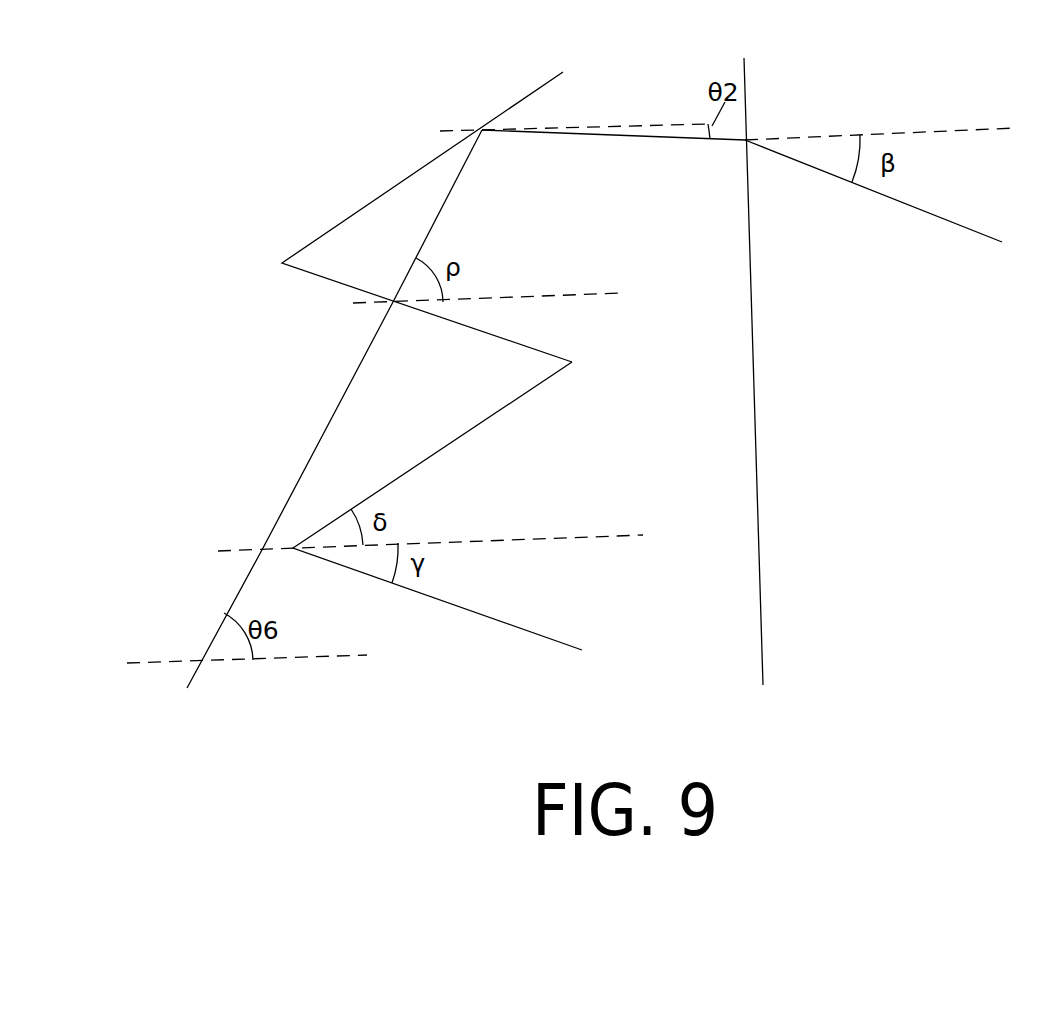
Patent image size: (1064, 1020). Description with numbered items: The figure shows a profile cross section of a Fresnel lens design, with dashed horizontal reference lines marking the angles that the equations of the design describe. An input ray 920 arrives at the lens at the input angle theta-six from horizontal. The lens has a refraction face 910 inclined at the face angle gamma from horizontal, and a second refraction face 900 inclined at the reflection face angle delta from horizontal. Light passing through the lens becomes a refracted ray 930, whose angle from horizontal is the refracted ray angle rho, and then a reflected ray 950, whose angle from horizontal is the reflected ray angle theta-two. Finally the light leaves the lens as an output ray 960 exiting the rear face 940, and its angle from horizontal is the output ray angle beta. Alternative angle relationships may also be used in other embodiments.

The refraction face 900 is at (530, 411).
The refraction face 910 is at (316, 297).
The input ray 920 is at (224, 580).
The refracted ray 930 is at (453, 217).
The rear face 940 is at (765, 94).
The reflected ray 950 is at (628, 148).
The output ray 960 is at (892, 215).